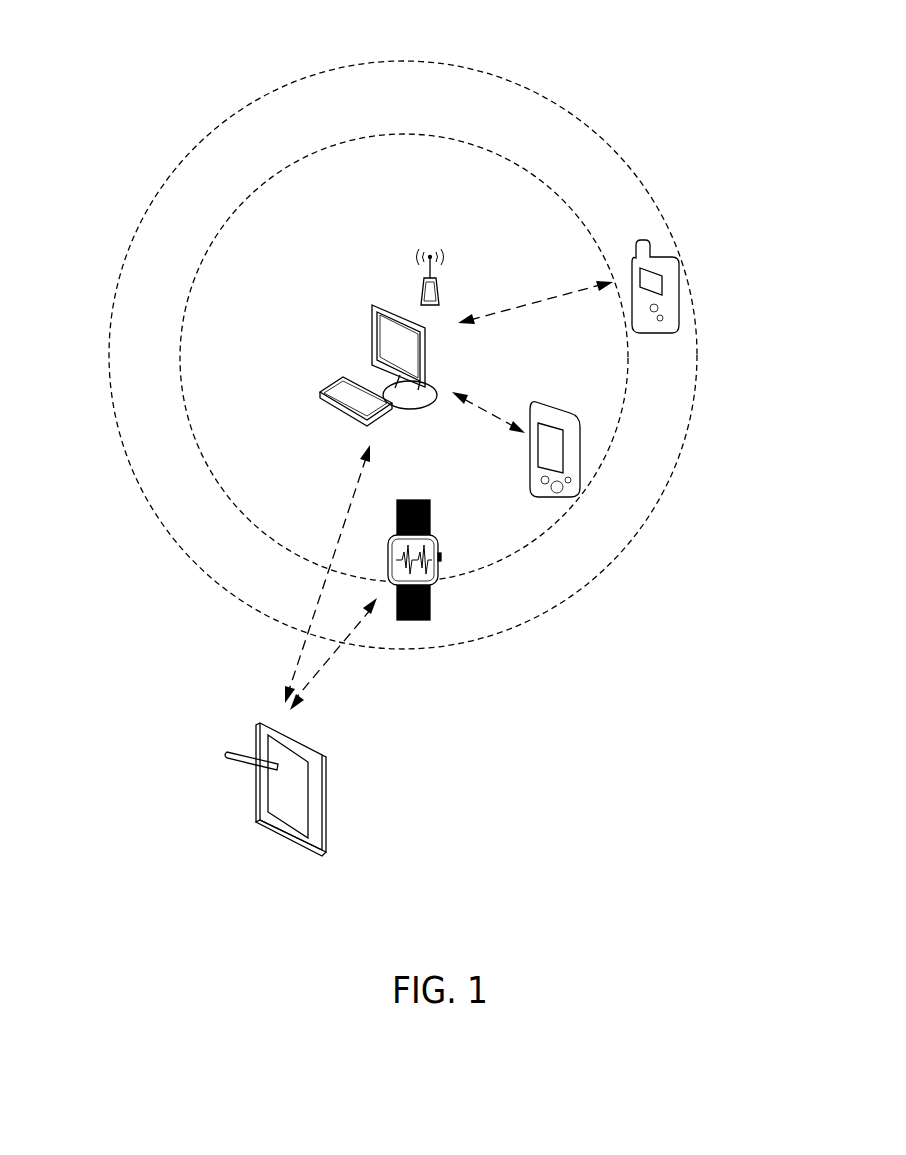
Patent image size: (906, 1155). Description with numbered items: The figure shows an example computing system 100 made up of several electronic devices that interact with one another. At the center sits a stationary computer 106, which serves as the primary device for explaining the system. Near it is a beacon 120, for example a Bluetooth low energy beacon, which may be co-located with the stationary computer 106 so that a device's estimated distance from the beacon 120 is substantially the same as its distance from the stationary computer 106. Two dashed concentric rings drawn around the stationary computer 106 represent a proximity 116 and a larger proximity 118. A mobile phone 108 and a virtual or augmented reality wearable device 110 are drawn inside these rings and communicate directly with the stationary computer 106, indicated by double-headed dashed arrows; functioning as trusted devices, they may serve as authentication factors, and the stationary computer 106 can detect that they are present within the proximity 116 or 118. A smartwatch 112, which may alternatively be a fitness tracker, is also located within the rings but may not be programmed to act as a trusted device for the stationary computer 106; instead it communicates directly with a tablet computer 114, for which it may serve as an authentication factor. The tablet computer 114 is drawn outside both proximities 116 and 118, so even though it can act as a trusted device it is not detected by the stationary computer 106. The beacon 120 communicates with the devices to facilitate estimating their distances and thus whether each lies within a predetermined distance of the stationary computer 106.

The computing system 100 is at (90, 72).
The stationary computer 106 is at (373, 305).
The mobile phone 108 is at (672, 268).
The virtual or augmented reality wearable device 110 is at (573, 420).
The smartwatch 112 is at (440, 548).
The tablet computer 114 is at (325, 752).
The proximity 116 is at (617, 437).
The proximity 118 is at (678, 460).
The beacon 120 is at (418, 290).